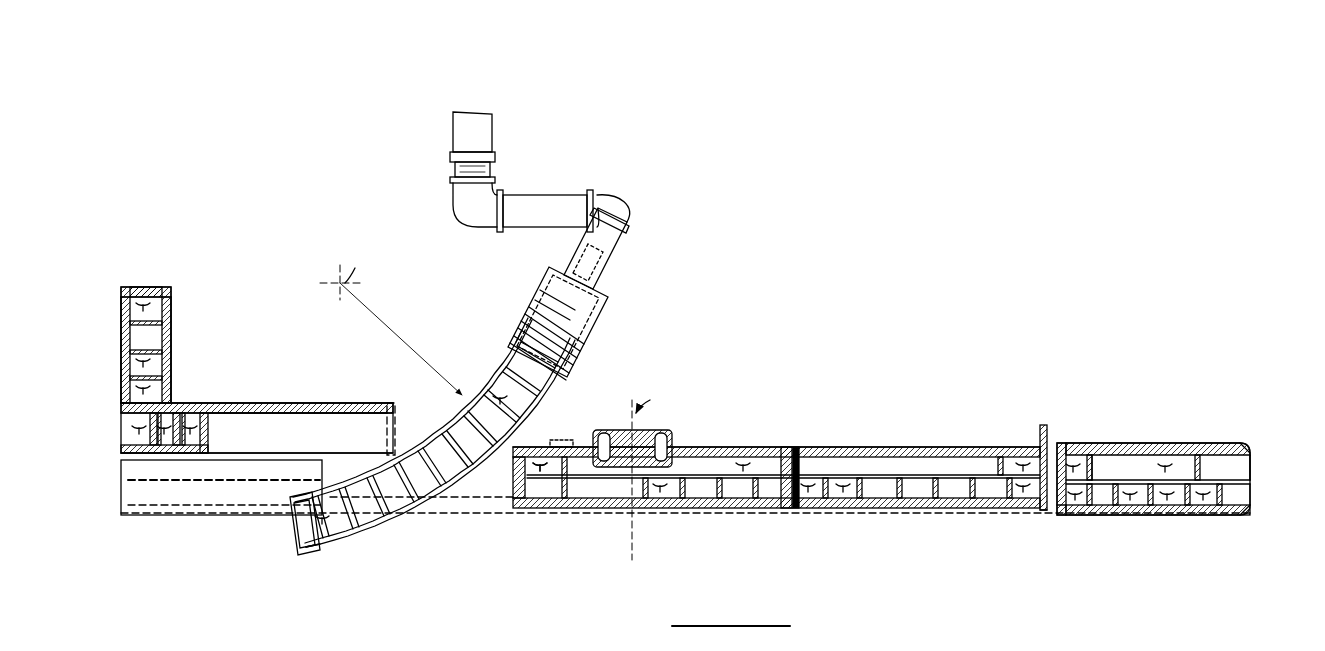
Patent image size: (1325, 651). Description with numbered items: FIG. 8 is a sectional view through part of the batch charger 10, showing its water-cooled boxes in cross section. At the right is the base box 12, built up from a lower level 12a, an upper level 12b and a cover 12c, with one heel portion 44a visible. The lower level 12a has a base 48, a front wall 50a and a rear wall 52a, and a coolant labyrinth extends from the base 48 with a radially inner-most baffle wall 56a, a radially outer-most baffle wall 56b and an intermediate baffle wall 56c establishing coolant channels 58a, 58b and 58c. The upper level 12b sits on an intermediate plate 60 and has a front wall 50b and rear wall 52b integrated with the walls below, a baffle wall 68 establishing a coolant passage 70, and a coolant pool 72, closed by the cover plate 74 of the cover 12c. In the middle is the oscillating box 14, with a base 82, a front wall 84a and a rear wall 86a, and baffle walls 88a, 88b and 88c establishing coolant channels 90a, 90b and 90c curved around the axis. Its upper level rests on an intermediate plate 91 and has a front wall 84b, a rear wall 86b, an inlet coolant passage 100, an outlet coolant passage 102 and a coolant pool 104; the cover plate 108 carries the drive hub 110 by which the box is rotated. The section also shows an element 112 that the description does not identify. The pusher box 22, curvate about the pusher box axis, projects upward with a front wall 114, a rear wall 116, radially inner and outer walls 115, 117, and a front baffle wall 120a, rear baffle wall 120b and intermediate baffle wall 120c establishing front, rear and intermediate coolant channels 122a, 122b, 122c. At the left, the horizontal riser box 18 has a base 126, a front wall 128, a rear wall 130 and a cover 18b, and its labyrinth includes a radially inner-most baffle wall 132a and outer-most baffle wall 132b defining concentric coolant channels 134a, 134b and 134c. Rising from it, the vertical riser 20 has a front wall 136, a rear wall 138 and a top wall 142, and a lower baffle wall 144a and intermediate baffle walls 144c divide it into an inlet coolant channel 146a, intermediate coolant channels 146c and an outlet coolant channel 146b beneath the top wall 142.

The conveyor system 10 is at (250, 118).
The base box 12 is at (1174, 493).
The lower level 12a is at (1260, 498).
The upper level 12b is at (1288, 468).
The cover 12c is at (1259, 441).
The oscillating box 14 is at (777, 467).
The horizontal riser box 18 is at (230, 443).
The cover 18b is at (200, 403).
The vertical riser 20 is at (152, 298).
The pusher box 22 is at (452, 423).
The heel portion 44a is at (126, 530).
The base 48 is at (1143, 512).
The front wall 50a is at (1047, 517).
The front wall 50b is at (1073, 464).
The rear wall 52a is at (1246, 518).
The rear wall 52b is at (1252, 456).
The radially inner-most baffle wall 56a is at (1098, 505).
The radially outer-most baffle wall 56b is at (1212, 515).
The intermediate baffle wall 56c is at (1133, 490).
The radially inner-most coolant channel 58a is at (1076, 499).
The radially outer-most coolant channel 58b is at (1228, 492).
The intermediate coolant channel 58c is at (1201, 500).
The intermediate plate 60 is at (1197, 470).
The baffle wall 68 is at (1093, 474).
The coolant passage 70 is at (1105, 445).
The coolant pool 72 is at (1168, 462).
The cover plate 74 is at (1156, 445).
The base 82 is at (768, 507).
The front wall 84a is at (520, 486).
The front wall 84b is at (515, 462).
The rear wall 86a is at (1044, 512).
The rear wall 86b is at (1046, 430).
The radially inner-most baffle wall 88a is at (564, 484).
The radially outer-most baffle wall 88b is at (1008, 498).
The intermediate baffle wall 88c is at (898, 480).
The radially inner-most coolant channel 90a is at (660, 492).
The radially outer-most coolant channel 90b is at (1022, 492).
The intermediate coolant channel 90c is at (843, 491).
The intermediate plate 91 is at (813, 476).
The inlet coolant passage 100 is at (1024, 462).
The outlet coolant passage 102 is at (542, 460).
The coolant pool 104 is at (745, 462).
The cover plate 108 is at (972, 446).
The drive hub 110 is at (676, 418).
The divider wall 112 is at (790, 446).
The front wall 114 is at (296, 552).
The radially inner wall 115 is at (500, 366).
The rear wall 116 is at (564, 246).
The radially outer wall 117 is at (403, 527).
The front baffle wall 120a is at (342, 524).
The rear baffle wall 120b is at (568, 350).
The intermediate baffle wall 120c is at (562, 372).
The front coolant channel 122a is at (323, 524).
The rear coolant channel 122b is at (512, 350).
The intermediate coolant channel 122c is at (527, 397).
The base 126 is at (125, 450).
The front wall 128 is at (123, 426).
The rear wall 130 is at (393, 432).
The radially inner-most baffle wall 132a is at (190, 440).
The radially outer-most baffle wall 132b is at (135, 446).
The radially inner-most coolant channel 134a is at (190, 436).
The radially outer-most coolant channel 134b is at (141, 434).
The intermediate coolant channel 134c is at (162, 436).
The front wall 136 is at (122, 308).
The rear wall 138 is at (172, 316).
The top wall 142 is at (150, 287).
The lower baffle wall 144a is at (130, 352).
The intermediate baffle wall 144c is at (168, 294).
The inlet coolant channel 146a is at (140, 389).
The outlet coolant channel 146b is at (143, 303).
The intermediate coolant channel 146c is at (145, 360).